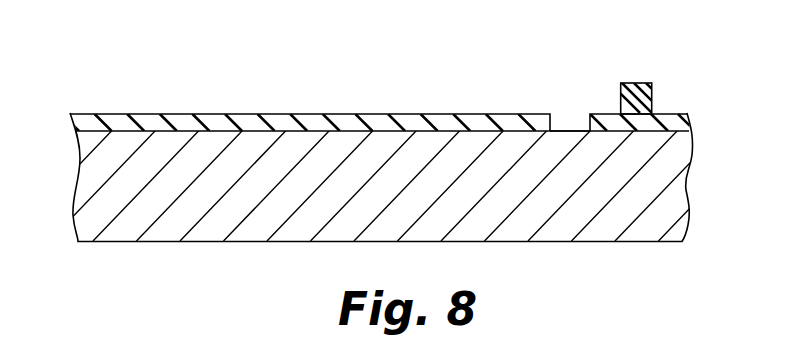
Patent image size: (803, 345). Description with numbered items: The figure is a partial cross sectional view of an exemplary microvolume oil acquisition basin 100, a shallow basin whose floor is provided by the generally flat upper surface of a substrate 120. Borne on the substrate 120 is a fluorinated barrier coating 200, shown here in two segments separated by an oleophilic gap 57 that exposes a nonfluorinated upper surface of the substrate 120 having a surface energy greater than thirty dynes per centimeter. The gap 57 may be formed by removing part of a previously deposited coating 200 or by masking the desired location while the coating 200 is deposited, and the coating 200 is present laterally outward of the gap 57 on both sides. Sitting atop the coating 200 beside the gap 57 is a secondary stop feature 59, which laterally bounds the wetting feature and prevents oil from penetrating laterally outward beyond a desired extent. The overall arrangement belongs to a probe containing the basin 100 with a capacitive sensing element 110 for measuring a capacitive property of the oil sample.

The capacitive sensing element 110 is at (27, 127).
The substrate 120 is at (252, 231).
The microvolume oil acquisition basin 100 is at (278, 106).
The fluorinated barrier coating 200 is at (152, 117).
The oleophilic gap 57 is at (567, 129).
The secondary stop feature 59 is at (638, 82).